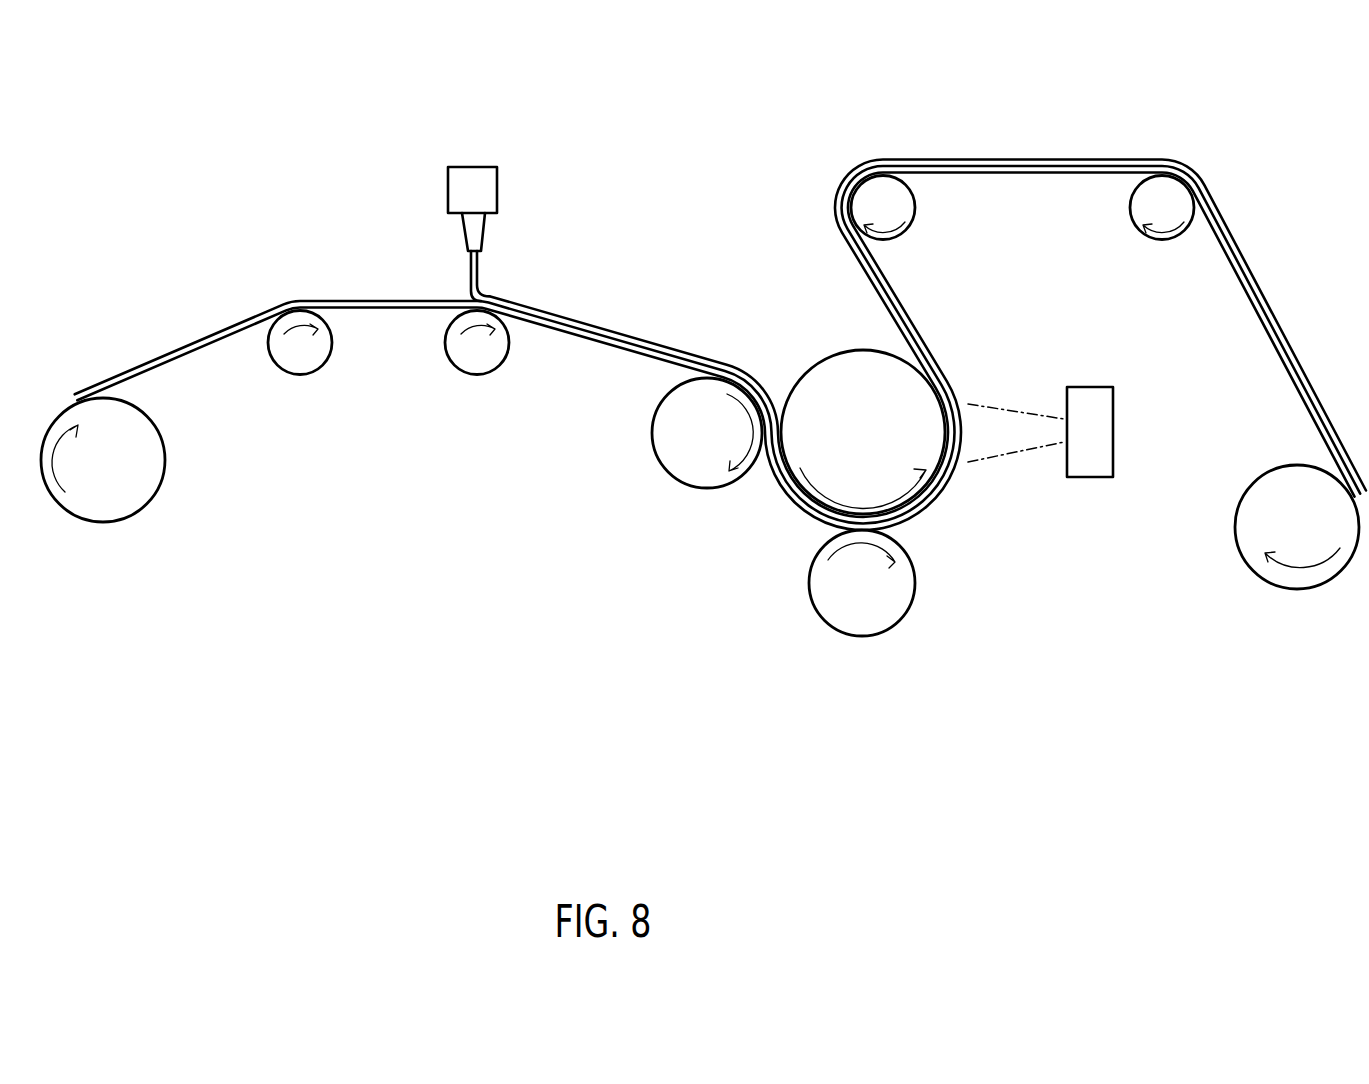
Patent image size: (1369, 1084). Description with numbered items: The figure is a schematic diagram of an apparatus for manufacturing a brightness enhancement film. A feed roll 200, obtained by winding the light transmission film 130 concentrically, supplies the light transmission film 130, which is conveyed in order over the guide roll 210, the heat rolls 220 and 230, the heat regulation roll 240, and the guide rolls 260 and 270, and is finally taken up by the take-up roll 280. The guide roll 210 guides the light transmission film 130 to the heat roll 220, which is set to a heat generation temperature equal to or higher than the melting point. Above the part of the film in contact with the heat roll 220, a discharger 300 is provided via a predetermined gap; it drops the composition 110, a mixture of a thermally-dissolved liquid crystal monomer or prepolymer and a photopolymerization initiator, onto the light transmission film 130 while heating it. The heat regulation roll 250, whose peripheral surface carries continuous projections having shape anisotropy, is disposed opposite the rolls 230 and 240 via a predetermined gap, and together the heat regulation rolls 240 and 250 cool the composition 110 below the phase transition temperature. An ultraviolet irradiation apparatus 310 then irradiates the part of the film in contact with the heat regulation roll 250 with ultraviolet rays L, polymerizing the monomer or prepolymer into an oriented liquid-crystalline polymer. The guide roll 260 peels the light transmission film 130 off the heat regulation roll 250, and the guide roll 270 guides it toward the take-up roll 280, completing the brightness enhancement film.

The light transmission film 130 is at (191, 343).
The composition 110 is at (482, 283).
The discharger 300 is at (472, 178).
The feed roll 200 is at (101, 518).
The guide roll 210 is at (305, 365).
The heat roll 220 is at (478, 365).
The heat roll 230 is at (708, 478).
The heat regulation roll 250 is at (826, 373).
The heat regulation roll 240 is at (863, 628).
The guide roll 260 is at (883, 185).
The guide roll 270 is at (1162, 185).
The take-up roll 280 is at (1302, 578).
The ultraviolet irradiation apparatus 310 is at (1088, 468).
The ultraviolet rays L is at (1018, 412).